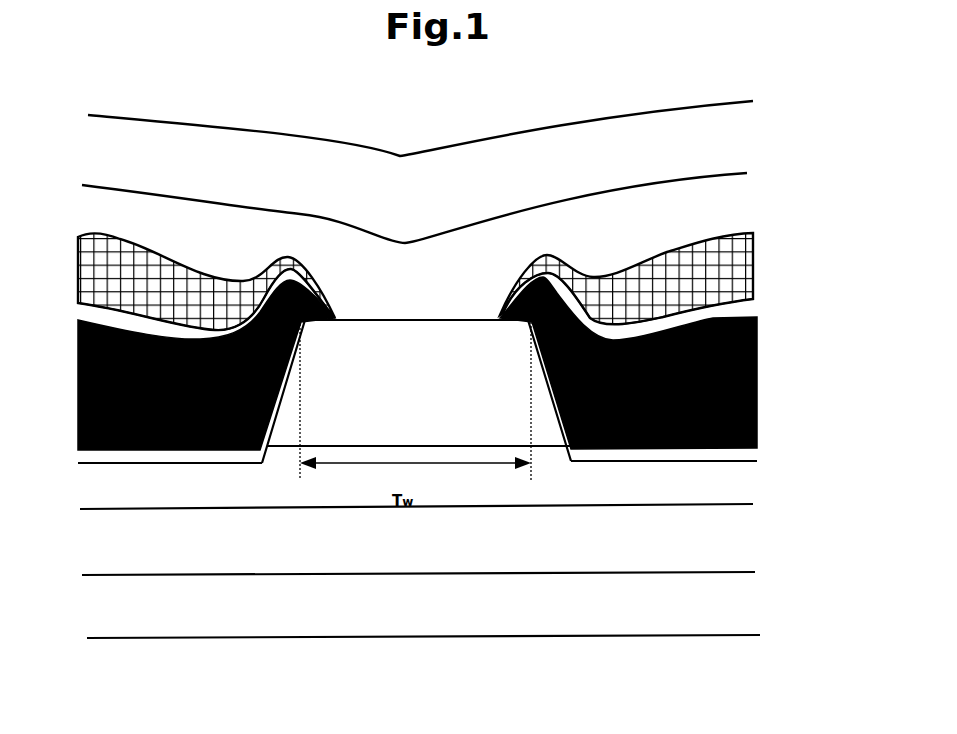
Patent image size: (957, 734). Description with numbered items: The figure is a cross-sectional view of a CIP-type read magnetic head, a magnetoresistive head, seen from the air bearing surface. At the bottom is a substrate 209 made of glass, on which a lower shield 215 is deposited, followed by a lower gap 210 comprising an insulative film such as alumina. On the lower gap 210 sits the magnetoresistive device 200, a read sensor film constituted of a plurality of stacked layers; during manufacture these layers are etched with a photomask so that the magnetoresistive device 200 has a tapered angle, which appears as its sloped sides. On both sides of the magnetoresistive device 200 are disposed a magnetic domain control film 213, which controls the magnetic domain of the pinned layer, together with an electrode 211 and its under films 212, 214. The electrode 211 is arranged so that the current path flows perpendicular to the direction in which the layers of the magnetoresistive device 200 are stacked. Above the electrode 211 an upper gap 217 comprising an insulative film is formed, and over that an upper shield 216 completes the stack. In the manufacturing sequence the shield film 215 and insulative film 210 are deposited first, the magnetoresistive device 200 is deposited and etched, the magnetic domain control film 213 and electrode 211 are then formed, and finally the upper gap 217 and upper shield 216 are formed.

The magnetoresistive device 200 is at (372, 373).
The substrate 209 is at (753, 603).
The lower gap 210 is at (748, 488).
The electrode 211 is at (753, 265).
The under film 212 is at (743, 311).
The magnetic domain control film 213 is at (755, 388).
The under film 214 is at (745, 453).
The lower shield 215 is at (750, 544).
The upper shield 216 is at (750, 134).
The upper gap 217 is at (750, 200).